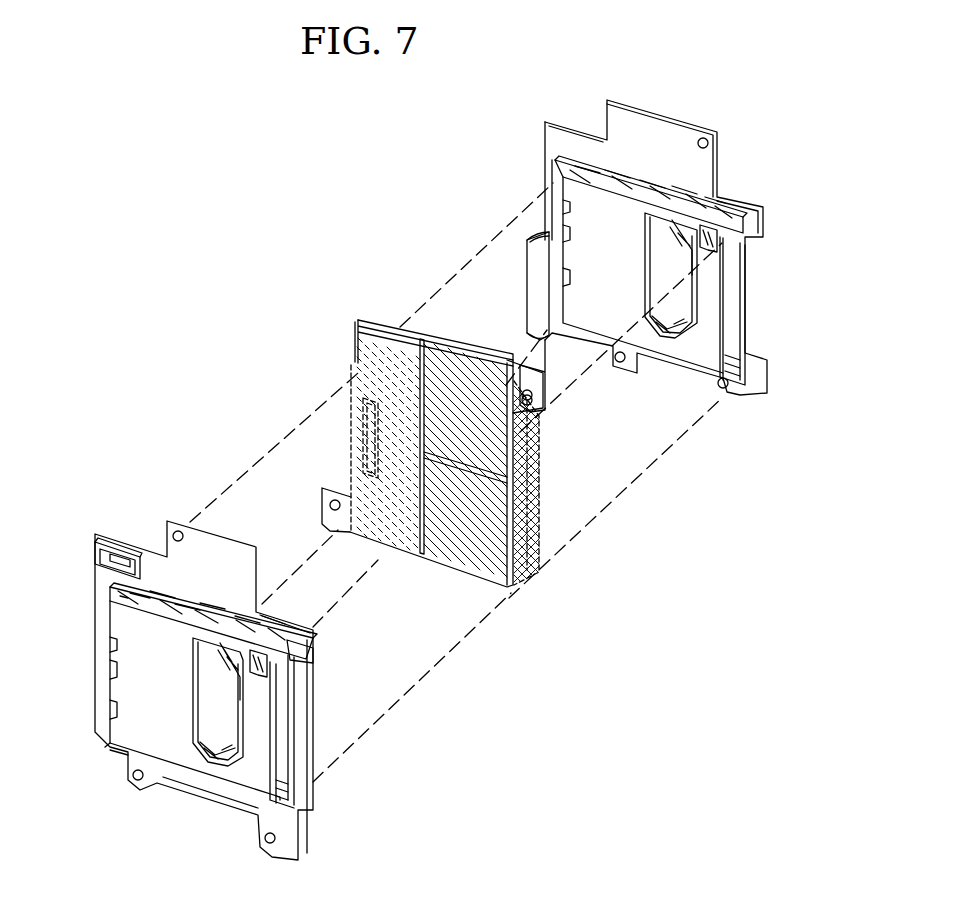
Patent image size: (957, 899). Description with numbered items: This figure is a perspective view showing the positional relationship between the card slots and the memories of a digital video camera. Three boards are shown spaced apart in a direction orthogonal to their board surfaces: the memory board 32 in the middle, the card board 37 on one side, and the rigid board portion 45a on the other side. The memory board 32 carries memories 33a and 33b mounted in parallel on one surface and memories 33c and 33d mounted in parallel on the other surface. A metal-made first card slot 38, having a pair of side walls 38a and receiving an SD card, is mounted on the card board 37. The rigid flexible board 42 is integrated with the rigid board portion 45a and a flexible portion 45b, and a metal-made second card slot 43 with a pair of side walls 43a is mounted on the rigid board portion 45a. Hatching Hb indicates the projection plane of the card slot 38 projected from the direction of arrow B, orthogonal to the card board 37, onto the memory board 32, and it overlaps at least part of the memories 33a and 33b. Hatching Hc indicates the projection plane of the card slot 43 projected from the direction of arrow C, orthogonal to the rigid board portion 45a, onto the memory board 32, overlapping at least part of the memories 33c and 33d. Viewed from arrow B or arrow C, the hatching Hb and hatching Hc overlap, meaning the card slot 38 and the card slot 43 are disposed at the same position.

The memory board 32 is at (360, 320).
The memory 33a is at (420, 354).
The memory 33b is at (436, 565).
The memory 33c is at (465, 345).
The memory 33d is at (537, 506).
The hatching Hb is at (380, 525).
The hatching Hc is at (537, 445).
The card board 37 is at (95, 630).
The first card slot 38 is at (268, 697).
The side walls 38a is at (163, 730).
The rigid flexible board 42 is at (548, 134).
The second card slot 43 is at (722, 271).
The side walls 43a is at (700, 317).
The rigid board portion 45a is at (653, 128).
The flexible portion 45b is at (528, 303).
The arrow B is at (166, 823).
The arrow C is at (807, 92).